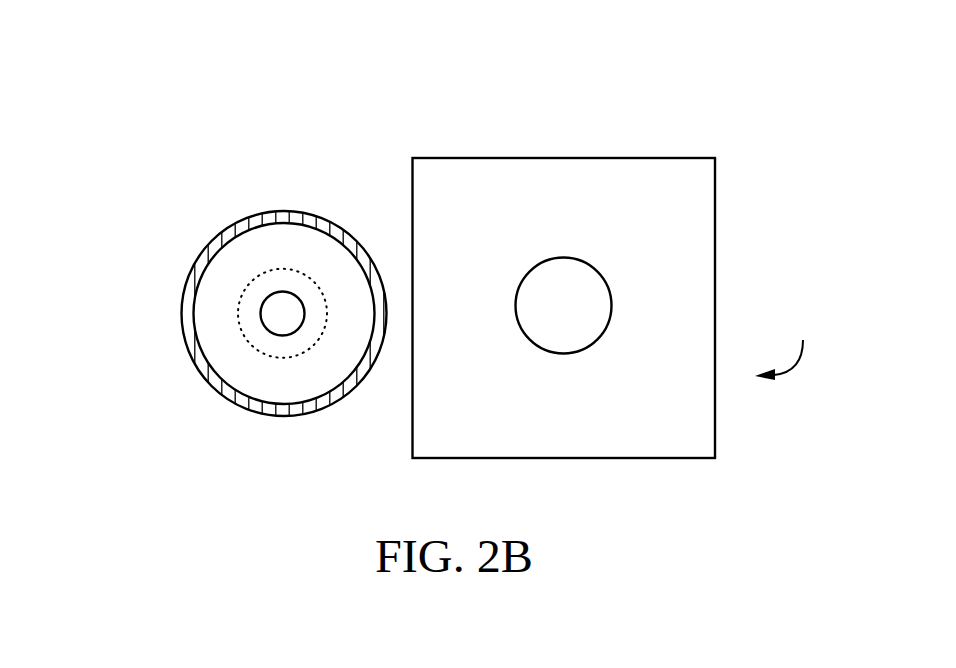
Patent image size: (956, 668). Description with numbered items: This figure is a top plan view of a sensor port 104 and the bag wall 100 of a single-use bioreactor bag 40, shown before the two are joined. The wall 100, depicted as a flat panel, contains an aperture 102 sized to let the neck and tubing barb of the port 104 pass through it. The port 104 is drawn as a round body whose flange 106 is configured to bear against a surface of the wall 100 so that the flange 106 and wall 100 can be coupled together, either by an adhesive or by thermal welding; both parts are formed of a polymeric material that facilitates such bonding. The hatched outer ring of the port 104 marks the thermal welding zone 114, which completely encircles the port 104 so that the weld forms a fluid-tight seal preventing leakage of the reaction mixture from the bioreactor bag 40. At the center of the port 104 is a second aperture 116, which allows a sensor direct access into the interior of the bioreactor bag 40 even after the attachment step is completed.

The bioreactor bag 40 is at (784, 345).
The bag wall 100 is at (699, 257).
The aperture 102 is at (577, 265).
The port 104 is at (192, 238).
The flange 106 is at (242, 368).
The thermal welding zone 114 is at (260, 220).
The aperture 116 is at (278, 303).